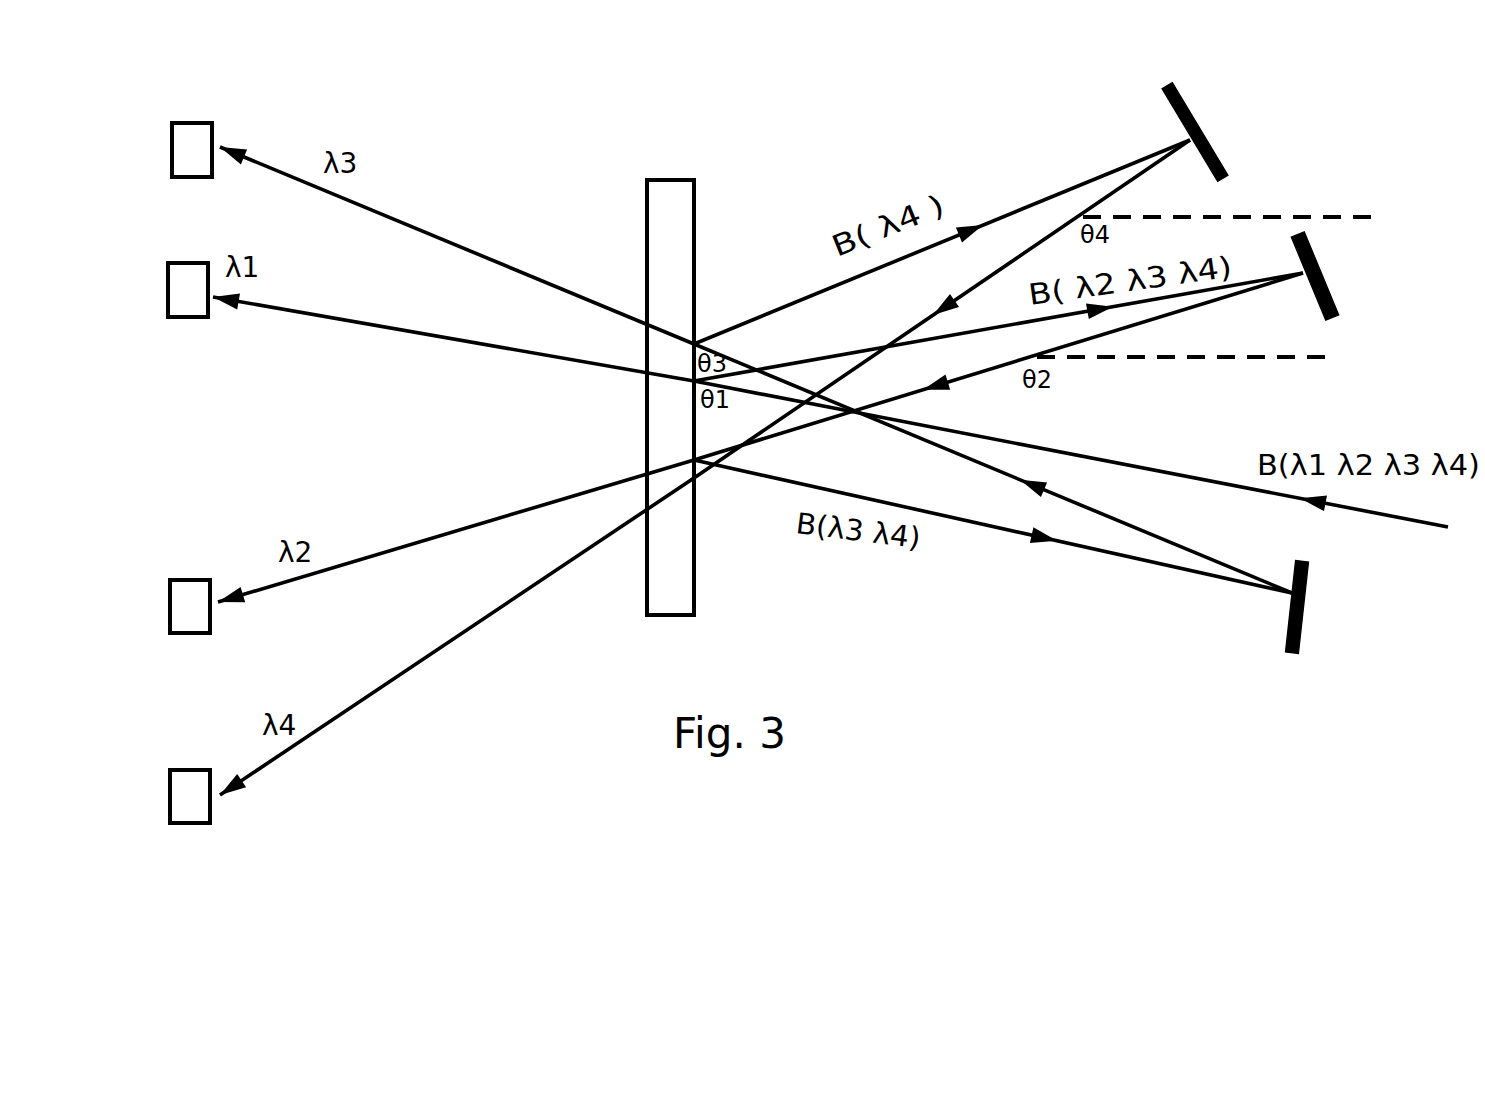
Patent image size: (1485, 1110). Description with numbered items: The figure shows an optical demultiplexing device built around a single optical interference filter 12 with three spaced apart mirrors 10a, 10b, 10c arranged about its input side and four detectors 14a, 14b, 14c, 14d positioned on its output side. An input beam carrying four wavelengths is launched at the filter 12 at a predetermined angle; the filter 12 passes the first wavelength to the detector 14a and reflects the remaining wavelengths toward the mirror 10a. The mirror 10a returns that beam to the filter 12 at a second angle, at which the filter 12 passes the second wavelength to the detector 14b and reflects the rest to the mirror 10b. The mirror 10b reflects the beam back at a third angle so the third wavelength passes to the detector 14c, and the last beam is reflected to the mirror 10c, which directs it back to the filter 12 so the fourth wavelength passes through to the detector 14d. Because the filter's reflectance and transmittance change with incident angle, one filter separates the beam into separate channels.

The mirror 10a is at (1323, 270).
The mirror 10b is at (1308, 620).
The mirror 10c is at (1193, 112).
The optical interference filter 12 is at (673, 178).
The detector 14a is at (190, 318).
The detector 14b is at (198, 634).
The detector 14c is at (187, 178).
The detector 14d is at (198, 824).